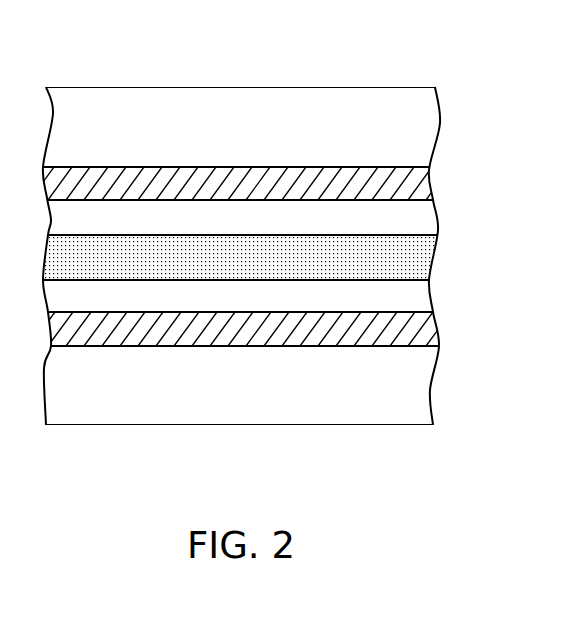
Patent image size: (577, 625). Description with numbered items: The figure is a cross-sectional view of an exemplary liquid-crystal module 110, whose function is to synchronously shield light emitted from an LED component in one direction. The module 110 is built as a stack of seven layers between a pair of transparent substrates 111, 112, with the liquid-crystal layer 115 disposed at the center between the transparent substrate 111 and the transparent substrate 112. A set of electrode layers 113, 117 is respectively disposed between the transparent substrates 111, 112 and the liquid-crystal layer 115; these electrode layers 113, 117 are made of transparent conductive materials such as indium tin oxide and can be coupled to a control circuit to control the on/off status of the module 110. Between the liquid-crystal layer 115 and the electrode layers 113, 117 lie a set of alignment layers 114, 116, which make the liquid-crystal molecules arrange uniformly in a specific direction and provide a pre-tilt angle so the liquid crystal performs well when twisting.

The liquid-crystal module 110 is at (512, 33).
The transparent substrate 111 is at (408, 384).
The transparent substrate 112 is at (408, 126).
The electrode layer 113 is at (408, 328).
The alignment layer 114 is at (408, 294).
The liquid-crystal layer 115 is at (408, 255).
The alignment layer 116 is at (408, 214).
The electrode layer 117 is at (408, 182).